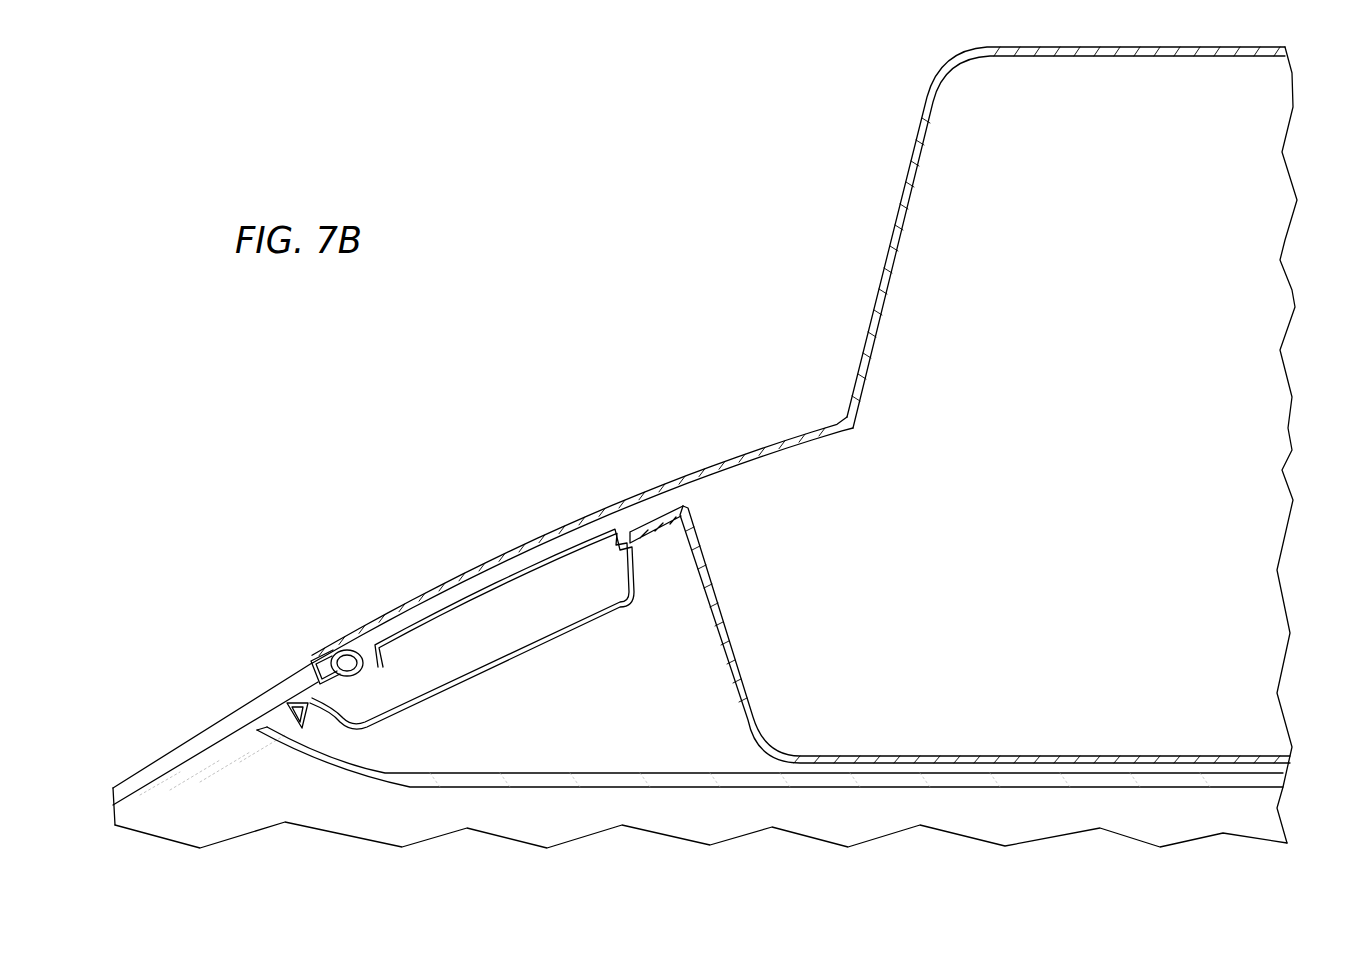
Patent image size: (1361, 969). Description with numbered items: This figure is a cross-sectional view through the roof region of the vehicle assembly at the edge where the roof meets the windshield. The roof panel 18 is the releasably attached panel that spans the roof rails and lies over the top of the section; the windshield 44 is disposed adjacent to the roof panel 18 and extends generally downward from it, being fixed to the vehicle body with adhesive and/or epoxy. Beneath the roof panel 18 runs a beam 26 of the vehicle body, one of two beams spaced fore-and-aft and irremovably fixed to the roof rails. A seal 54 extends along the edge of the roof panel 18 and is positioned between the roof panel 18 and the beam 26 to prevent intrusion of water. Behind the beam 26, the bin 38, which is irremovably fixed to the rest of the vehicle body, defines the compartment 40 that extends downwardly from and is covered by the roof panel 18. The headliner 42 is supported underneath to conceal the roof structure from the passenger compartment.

The roof panel 18 is at (473, 567).
The beam 26 is at (362, 681).
The bin 38 is at (730, 633).
The compartment 40 is at (1246, 298).
The headliner 42 is at (636, 772).
The windshield 44 is at (237, 710).
The seal 54 is at (310, 656).